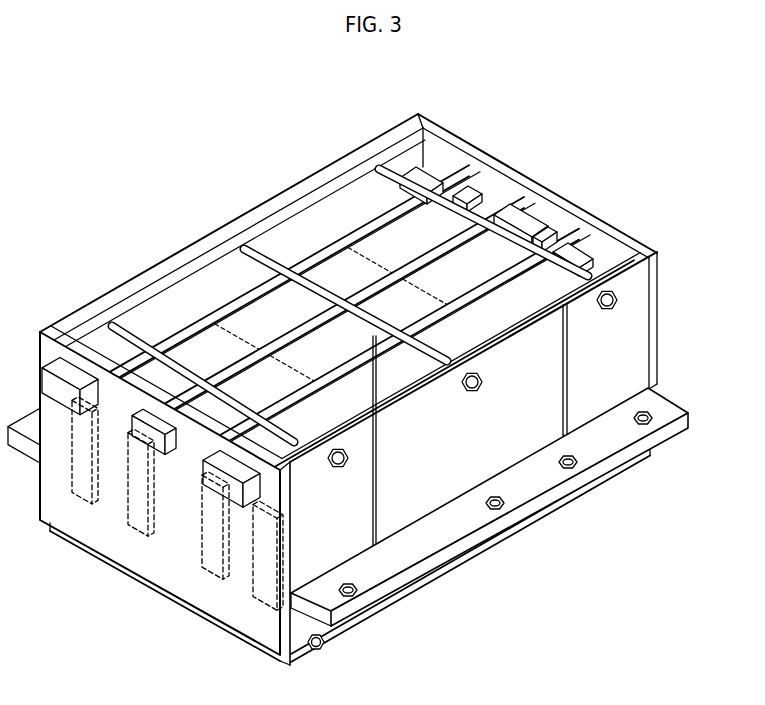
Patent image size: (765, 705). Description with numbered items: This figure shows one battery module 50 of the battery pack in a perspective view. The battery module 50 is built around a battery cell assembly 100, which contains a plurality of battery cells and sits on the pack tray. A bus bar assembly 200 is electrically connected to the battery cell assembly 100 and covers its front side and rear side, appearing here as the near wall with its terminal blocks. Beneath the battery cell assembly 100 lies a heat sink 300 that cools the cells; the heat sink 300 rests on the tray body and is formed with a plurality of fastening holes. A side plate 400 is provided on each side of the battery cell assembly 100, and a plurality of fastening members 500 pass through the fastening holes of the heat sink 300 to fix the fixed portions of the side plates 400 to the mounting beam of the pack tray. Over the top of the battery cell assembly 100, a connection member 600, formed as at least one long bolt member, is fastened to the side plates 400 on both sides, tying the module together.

The battery module 50 is at (173, 140).
The battery cell assembly 100 is at (335, 205).
The bus bar assembly 200 is at (118, 573).
The heat sink 300 is at (213, 620).
The side plate 400 is at (672, 450).
The fastening member 500 is at (437, 547).
The connection member 600 is at (447, 210).